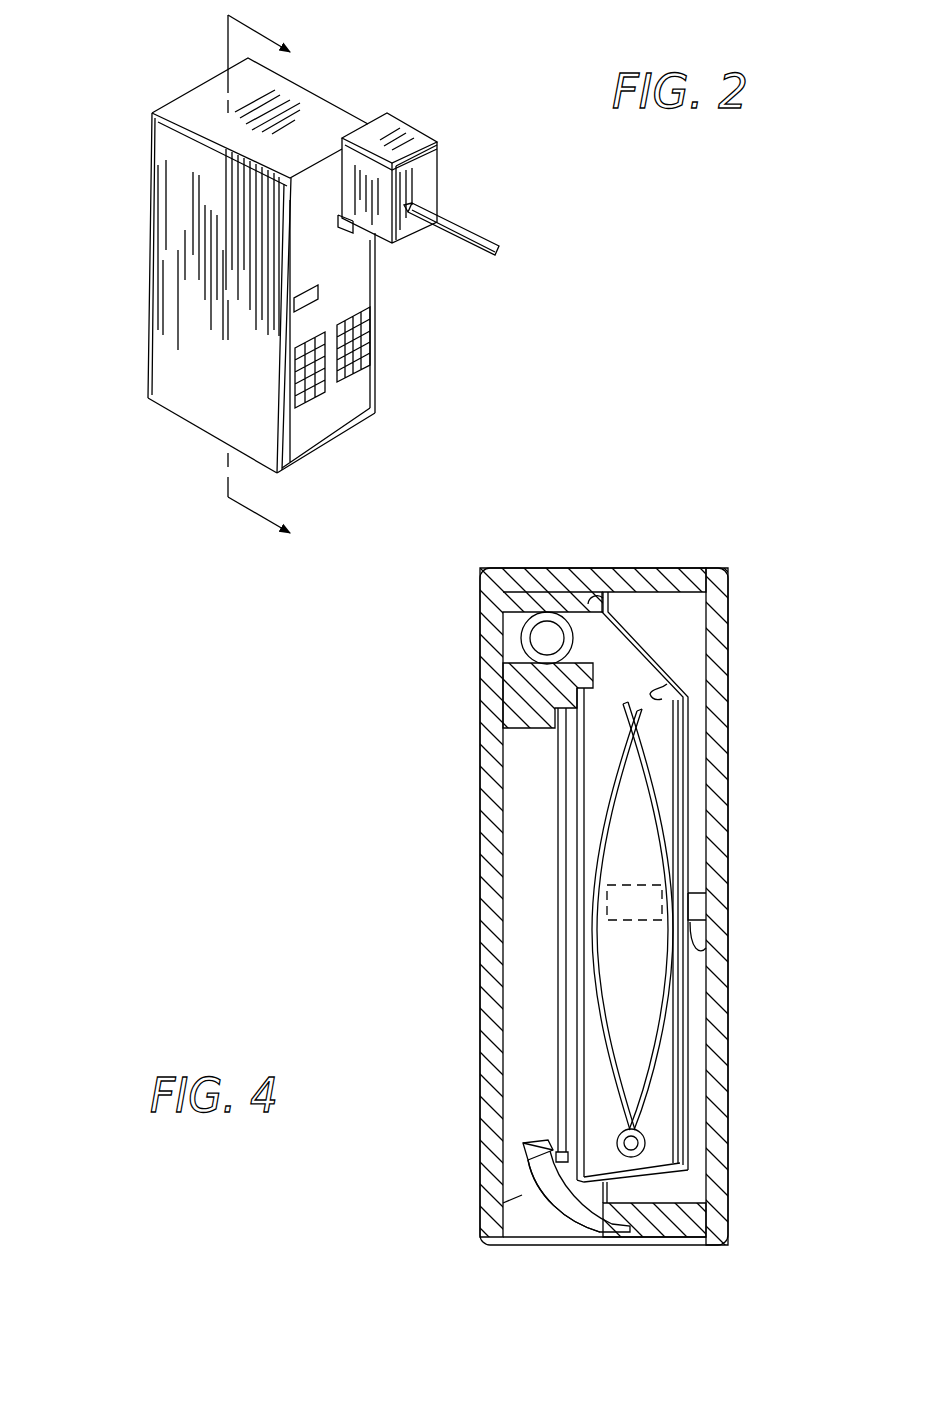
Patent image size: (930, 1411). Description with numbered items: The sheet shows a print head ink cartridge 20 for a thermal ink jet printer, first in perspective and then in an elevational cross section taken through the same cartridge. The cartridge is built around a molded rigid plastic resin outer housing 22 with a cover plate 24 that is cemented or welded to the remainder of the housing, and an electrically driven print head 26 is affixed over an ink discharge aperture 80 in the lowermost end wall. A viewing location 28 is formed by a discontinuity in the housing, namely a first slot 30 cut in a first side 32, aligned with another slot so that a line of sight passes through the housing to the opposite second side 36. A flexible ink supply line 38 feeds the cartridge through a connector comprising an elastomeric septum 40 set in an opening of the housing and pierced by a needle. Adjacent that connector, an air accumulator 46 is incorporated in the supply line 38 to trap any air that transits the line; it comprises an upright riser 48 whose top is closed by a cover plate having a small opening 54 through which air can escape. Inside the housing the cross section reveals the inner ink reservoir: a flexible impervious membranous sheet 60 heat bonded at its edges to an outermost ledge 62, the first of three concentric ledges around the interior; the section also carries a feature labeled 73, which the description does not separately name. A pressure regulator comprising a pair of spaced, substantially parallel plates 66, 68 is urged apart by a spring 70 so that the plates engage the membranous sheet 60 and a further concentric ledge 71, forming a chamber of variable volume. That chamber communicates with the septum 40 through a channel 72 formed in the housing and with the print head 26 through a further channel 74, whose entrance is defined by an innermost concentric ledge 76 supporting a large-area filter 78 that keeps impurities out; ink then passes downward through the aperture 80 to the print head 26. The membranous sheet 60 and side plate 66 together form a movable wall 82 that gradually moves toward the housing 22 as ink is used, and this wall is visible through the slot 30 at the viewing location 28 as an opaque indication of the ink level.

In FIG. 2, the cartridge 20 is at (574, 284).
In FIG. 4, the cartridge 20 is at (380, 902).
In FIG. 2, the outer housing 22 is at (323, 100).
In FIG. 4, the outer housing 22 is at (690, 567).
In FIG. 2, the cover plate 24 is at (172, 212).
In FIG. 4, the cover plate 24 is at (730, 720).
In FIG. 2, the print head 26 is at (330, 445).
In FIG. 4, the print head 26 is at (690, 1246).
In FIG. 2, the viewing location 28 is at (320, 308).
In FIG. 2, the first slot 30 is at (318, 348).
In FIG. 4, the first slot 30 is at (703, 950).
In FIG. 2, the first side 32 is at (358, 268).
In FIG. 2, the second side 36 is at (152, 128).
In FIG. 2, the ink supply line 38 is at (480, 233).
In FIG. 4, the septum 40 is at (547, 638).
In FIG. 2, the air accumulator 46 is at (442, 172).
In FIG. 2, the riser 48 is at (440, 196).
In FIG. 2, the opening 54 is at (415, 128).
In FIG. 4, the membranous sheet 60 is at (647, 648).
In FIG. 4, the outermost ledge 62 is at (590, 598).
In FIG. 4, the side plate 66 is at (658, 1140).
In FIG. 4, the plate 68 is at (575, 1125).
In FIG. 4, the spring 70 is at (662, 1085).
In FIG. 4, the concentric ledge 71 is at (520, 1190).
In FIG. 4, the channel 72 is at (515, 637).
In FIG. 4, the hook 73 is at (667, 684).
In FIG. 4, the further channel 74 is at (521, 1182).
In FIG. 4, the innermost concentric ledge 76 is at (522, 1144).
In FIG. 4, the filter 78 is at (553, 795).
In FIG. 4, the ink discharge aperture 80 is at (583, 1236).
In FIG. 4, the movable wall 82 is at (706, 882).